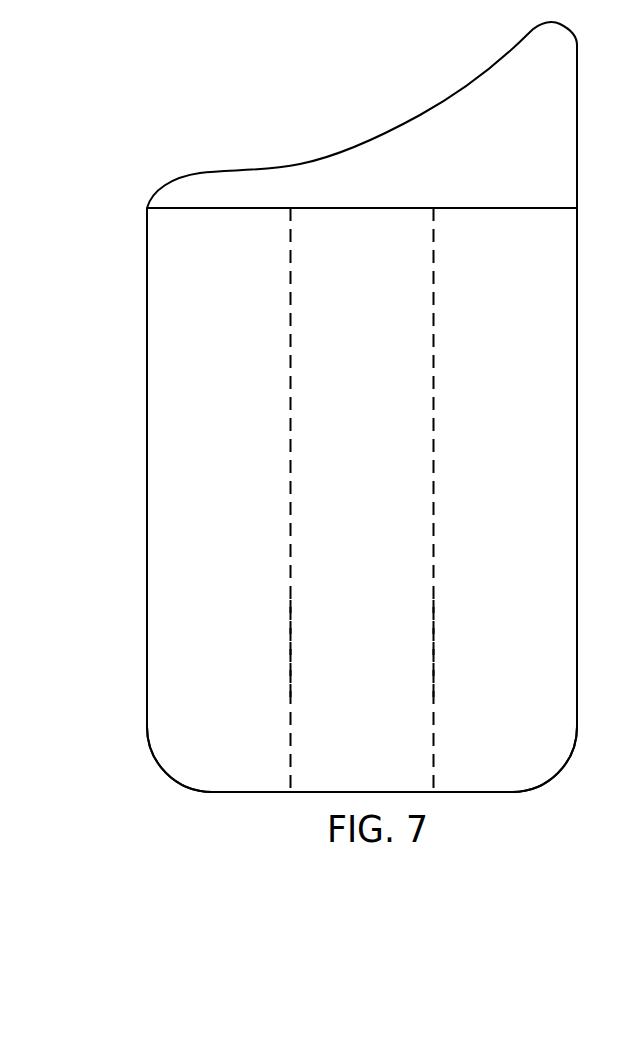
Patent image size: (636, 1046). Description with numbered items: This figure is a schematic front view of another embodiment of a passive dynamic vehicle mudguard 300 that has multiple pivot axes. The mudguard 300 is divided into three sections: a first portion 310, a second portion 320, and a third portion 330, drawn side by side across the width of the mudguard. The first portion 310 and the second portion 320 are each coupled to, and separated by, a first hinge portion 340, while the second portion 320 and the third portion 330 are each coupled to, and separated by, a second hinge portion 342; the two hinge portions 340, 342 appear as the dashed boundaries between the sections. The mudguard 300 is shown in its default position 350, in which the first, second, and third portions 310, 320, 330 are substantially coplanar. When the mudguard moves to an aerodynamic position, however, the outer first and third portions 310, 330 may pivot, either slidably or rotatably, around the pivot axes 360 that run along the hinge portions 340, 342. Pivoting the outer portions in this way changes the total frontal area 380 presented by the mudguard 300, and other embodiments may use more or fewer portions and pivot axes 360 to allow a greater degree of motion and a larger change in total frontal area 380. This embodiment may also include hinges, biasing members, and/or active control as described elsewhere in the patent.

The passive dynamic vehicle mudguard 300 is at (248, 120).
The first portion 310 is at (242, 479).
The second portion 320 is at (386, 479).
The third portion 330 is at (530, 479).
The first hinge portion 340 is at (297, 373).
The second hinge portion 342 is at (440, 373).
The default position 350 is at (170, 783).
The pivot axes 360 is at (292, 652).
The total frontal area 380 is at (555, 785).